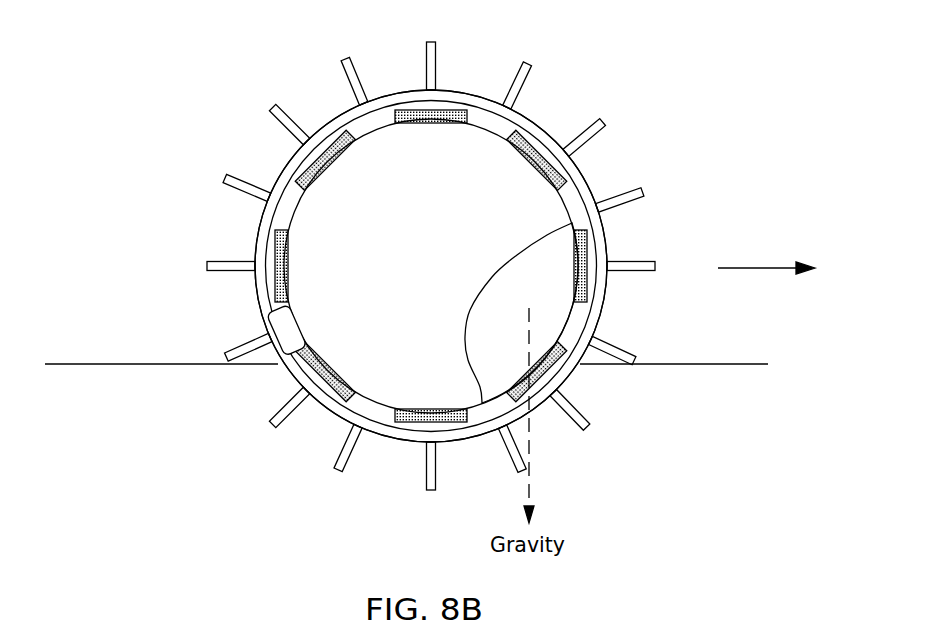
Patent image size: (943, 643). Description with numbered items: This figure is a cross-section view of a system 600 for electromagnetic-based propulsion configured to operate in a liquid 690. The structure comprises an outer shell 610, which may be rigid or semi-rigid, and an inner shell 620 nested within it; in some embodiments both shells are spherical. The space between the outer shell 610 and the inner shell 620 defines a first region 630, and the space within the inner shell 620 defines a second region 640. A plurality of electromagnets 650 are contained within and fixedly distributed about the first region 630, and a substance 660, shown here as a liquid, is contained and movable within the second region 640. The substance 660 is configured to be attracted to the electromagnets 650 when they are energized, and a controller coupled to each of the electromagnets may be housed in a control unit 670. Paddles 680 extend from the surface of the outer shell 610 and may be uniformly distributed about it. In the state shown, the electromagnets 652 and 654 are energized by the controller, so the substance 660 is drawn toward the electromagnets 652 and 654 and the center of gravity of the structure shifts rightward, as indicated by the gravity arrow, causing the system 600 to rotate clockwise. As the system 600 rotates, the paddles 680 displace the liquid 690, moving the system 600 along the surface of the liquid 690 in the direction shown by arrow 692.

The system 600 is at (98, 82).
The outer shell 610 is at (342, 113).
The inner shell 620 is at (275, 207).
The first region 630 is at (479, 120).
The second region 640 is at (515, 212).
The electromagnets 650 is at (401, 112).
The electromagnet 652 is at (582, 260).
The electromagnet 654 is at (553, 370).
The substance 660 is at (548, 312).
The control unit 670 is at (272, 328).
The paddles 680 is at (528, 78).
The liquid 690 is at (140, 363).
The arrow 692 is at (777, 270).